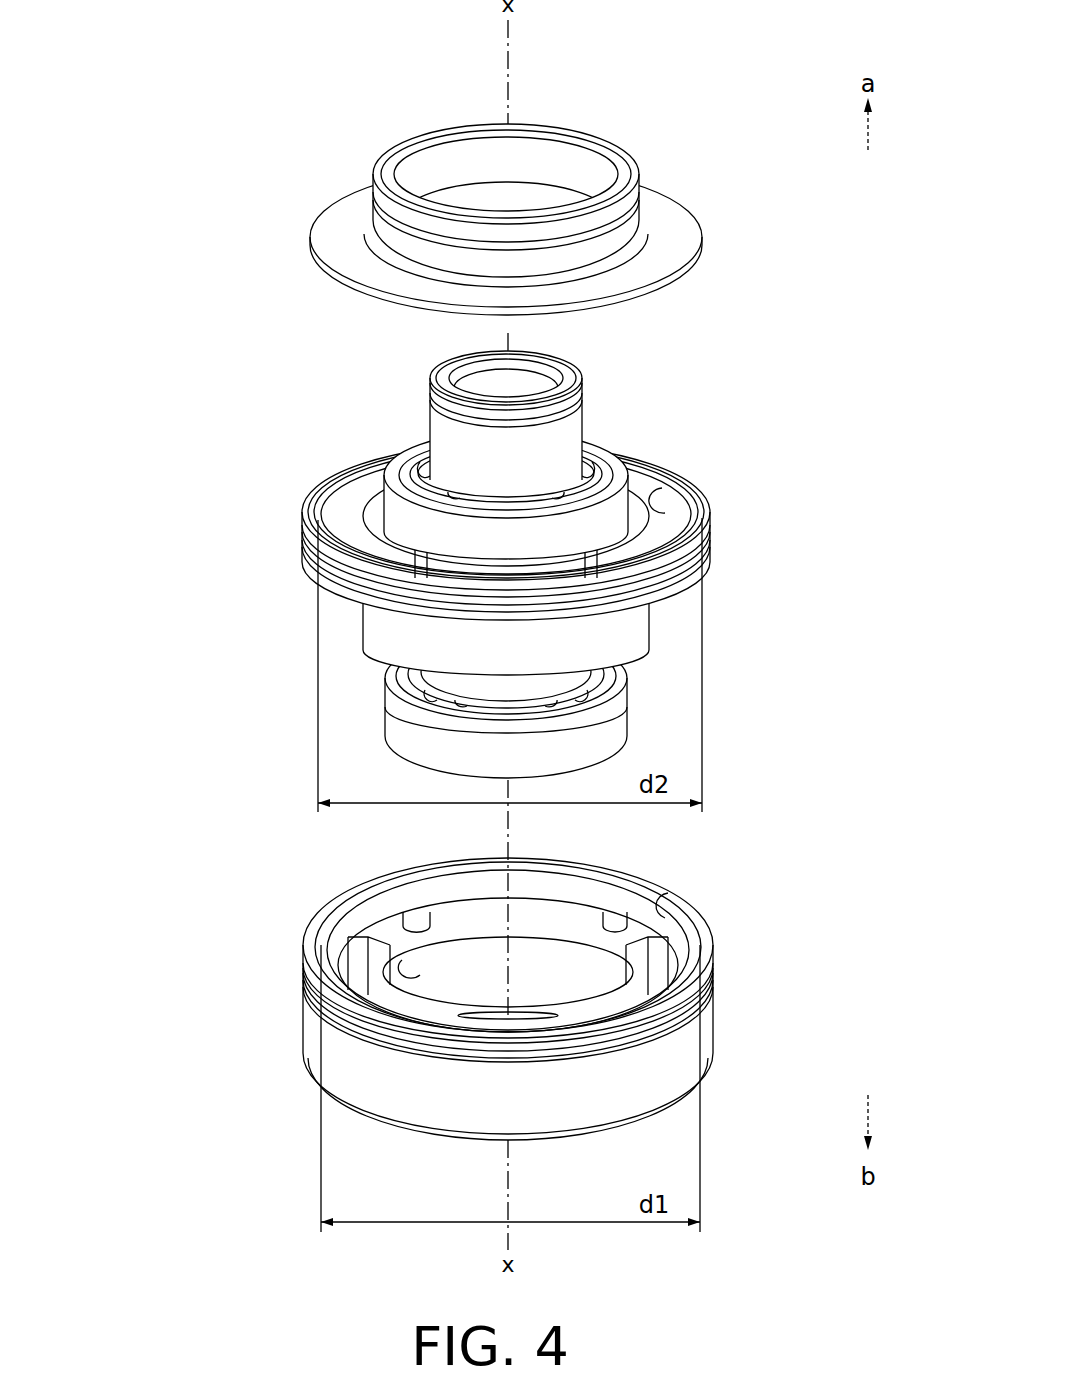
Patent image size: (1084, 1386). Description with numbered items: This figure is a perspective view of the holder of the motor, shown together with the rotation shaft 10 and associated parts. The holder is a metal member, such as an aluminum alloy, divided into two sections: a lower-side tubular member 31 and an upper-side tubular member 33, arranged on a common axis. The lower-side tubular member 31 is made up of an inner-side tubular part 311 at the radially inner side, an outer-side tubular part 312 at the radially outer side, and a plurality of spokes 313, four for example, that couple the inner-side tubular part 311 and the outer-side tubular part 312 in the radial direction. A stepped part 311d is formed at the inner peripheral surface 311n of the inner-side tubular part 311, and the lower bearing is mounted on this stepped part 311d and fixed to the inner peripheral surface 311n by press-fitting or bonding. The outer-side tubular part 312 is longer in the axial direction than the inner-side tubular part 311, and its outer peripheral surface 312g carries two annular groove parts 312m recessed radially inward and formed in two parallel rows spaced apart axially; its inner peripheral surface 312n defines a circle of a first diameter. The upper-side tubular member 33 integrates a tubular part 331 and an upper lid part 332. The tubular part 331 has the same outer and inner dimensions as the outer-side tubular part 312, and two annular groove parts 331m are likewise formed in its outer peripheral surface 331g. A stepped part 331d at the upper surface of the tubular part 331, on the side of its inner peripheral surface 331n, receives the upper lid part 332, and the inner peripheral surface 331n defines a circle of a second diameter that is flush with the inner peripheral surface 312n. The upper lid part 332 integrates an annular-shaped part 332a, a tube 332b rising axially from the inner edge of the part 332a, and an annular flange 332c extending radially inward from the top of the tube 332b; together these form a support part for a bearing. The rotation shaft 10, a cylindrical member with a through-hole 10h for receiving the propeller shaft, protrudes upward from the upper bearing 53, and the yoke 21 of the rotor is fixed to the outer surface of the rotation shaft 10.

The rotation shaft 10 is at (504, 395).
The through-hole 10h is at (490, 378).
The yoke 21 is at (373, 540).
The lower-side tubular member 31 is at (504, 986).
The inner-side tubular part 311 is at (458, 928).
The inner peripheral surface 311n is at (420, 972).
The stepped part 311d is at (425, 997).
The outer-side tubular part 312 is at (706, 935).
The inner peripheral surface 312n is at (668, 893).
The groove parts 312m is at (702, 1007).
The outer peripheral surface 312g is at (705, 1032).
The spokes 313 is at (623, 928).
The upper-side tubular member 33 is at (534, 544).
The tubular part 331 is at (561, 508).
The stepped part 331d is at (323, 500).
The inner peripheral surface 331n is at (672, 512).
The groove parts 331m is at (707, 558).
The outer peripheral surface 331g is at (708, 568).
The upper lid part 332 is at (474, 164).
The annular-shaped part 332a is at (347, 238).
The tube 332b is at (388, 220).
The flange 332c is at (506, 139).
The bearing 53 is at (612, 433).